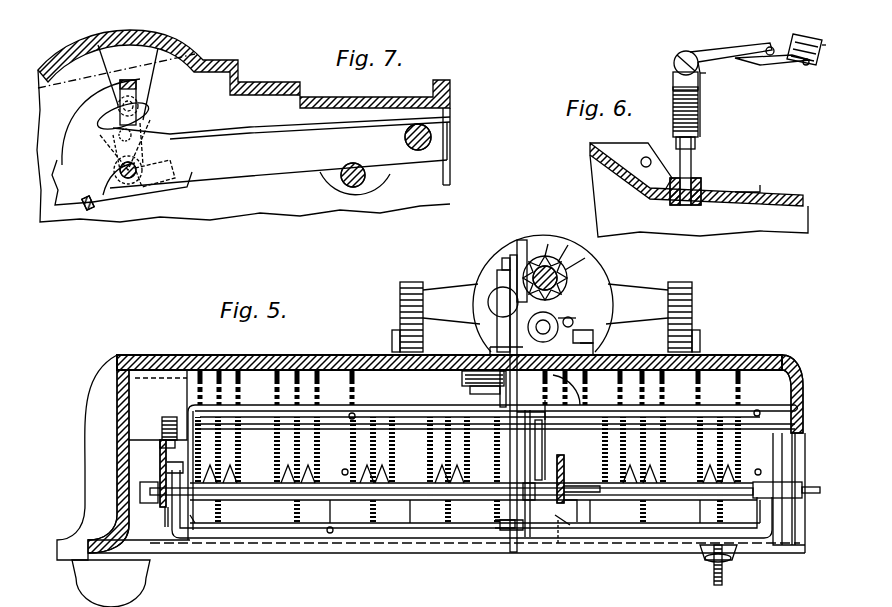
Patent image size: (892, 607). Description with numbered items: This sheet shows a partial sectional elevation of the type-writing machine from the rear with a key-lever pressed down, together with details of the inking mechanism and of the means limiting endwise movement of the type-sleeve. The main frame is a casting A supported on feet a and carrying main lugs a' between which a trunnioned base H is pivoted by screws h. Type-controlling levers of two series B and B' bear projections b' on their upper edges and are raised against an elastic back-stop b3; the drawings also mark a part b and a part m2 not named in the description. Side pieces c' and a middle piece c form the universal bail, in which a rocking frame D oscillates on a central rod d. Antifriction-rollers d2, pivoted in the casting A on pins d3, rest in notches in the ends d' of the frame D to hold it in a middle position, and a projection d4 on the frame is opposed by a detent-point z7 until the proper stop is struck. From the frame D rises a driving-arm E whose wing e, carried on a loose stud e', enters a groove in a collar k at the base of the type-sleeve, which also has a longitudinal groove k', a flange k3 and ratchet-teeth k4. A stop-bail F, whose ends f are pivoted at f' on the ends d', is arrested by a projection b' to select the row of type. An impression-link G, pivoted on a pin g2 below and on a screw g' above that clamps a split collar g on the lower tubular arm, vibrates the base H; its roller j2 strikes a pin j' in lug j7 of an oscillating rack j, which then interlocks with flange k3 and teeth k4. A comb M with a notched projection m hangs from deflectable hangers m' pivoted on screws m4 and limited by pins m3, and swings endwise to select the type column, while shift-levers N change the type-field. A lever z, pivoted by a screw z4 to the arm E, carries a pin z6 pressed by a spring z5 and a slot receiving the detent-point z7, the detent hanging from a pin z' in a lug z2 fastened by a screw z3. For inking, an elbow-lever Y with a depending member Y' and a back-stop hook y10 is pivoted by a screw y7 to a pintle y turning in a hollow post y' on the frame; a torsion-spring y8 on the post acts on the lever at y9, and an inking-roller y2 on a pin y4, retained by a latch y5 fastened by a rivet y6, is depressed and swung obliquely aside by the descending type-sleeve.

In FIG. 5, the casting (main frame) A is at (96, 473).
In FIG. 6, the casting (main frame) A is at (699, 190).
In FIG. 7, the casting (main frame) A is at (244, 107).
In FIG. 5, the feet a is at (115, 583).
In FIG. 5, the main lugs a' is at (546, 339).
In FIG. 5, the type-controlling levers (first series) B is at (469, 473).
In FIG. 5, the type-controlling levers (second series) B' is at (468, 483).
In FIG. 7, the type-controlling levers (second series) B' is at (280, 155).
In FIG. 5, the adjusting screw b is at (718, 565).
In FIG. 5, the projections b' is at (469, 387).
In FIG. 7, the projections b' is at (99, 122).
In FIG. 5, the back-stop b3 is at (545, 442).
In FIG. 5, the middle piece c is at (566, 513).
In FIG. 5, the side pieces c' is at (155, 514).
In FIG. 7, the side pieces c' is at (281, 128).
In FIG. 5, the rocking frame D is at (469, 512).
In FIG. 7, the rocking frame D is at (125, 202).
In FIG. 5, the central rod d is at (485, 486).
In FIG. 7, the central rod d is at (131, 176).
In FIG. 5, the ends of rocking frame d' is at (472, 504).
In FIG. 7, the ends of rocking frame d' is at (98, 152).
In FIG. 5, the antifriction-rollers d2 is at (158, 405).
In FIG. 5, the pins d3 is at (152, 435).
In FIG. 5, the projection d4 is at (498, 531).
In FIG. 5, the driving-arm E is at (503, 403).
In FIG. 5, the wing e is at (513, 271).
In FIG. 5, the loose stud e' is at (496, 303).
In FIG. 5, the stop-bail F is at (492, 400).
In FIG. 7, the stop-bail F is at (128, 85).
In FIG. 7, the ends of stop-bail f is at (106, 155).
In FIG. 5, the pivots of stop-bail f' is at (171, 472).
In FIG. 7, the pivots of stop-bail f' is at (144, 144).
In FIG. 5, the impression-link G is at (579, 390).
In FIG. 5, the clasp or split collar g is at (501, 347).
In FIG. 5, the screw g' is at (595, 347).
In FIG. 5, the pin g2 is at (579, 479).
In FIG. 5, the trunnioned base H is at (545, 293).
In FIG. 5, the screws h is at (400, 300).
In FIG. 5, the oscillating rack j is at (551, 316).
In FIG. 5, the pin j' is at (579, 321).
In FIG. 5, the antifriction-roller j2 is at (585, 338).
In FIG. 5, the lug j7 is at (574, 306).
In FIG. 5, the collar k is at (546, 269).
In FIG. 5, the longitudinal groove k' is at (546, 242).
In FIG. 5, the flange k3 is at (569, 244).
In FIG. 5, the ratchet-teeth k4 is at (582, 256).
In FIG. 5, the comb M is at (475, 521).
In FIG. 5, the projection m is at (544, 472).
In FIG. 5, the hangers m' is at (493, 461).
In FIG. 5, the pivot m2 is at (318, 529).
In FIG. 5, the pins m3 is at (550, 464).
In FIG. 5, the screws m4 is at (495, 423).
In FIG. 5, the shift-lever N is at (158, 484).
In FIG. 6, the elbow-lever (inking-arm) Y is at (731, 82).
In FIG. 6, the depending arm Y' is at (713, 98).
In FIG. 6, the pintle y is at (684, 204).
In FIG. 6, the hollow post y' is at (700, 171).
In FIG. 6, the inking-roller y2 is at (804, 38).
In FIG. 6, the pin y4 is at (831, 36).
In FIG. 6, the latch y5 is at (789, 53).
In FIG. 6, the rivet y6 is at (772, 67).
In FIG. 6, the screw y7 is at (678, 61).
In FIG. 6, the torsion-spring y8 is at (672, 112).
In FIG. 6, the point of spring action y9 is at (672, 84).
In FIG. 6, the hook y10 is at (669, 137).
In FIG. 5, the lever z is at (503, 485).
In FIG. 5, the pin z' is at (472, 379).
In FIG. 5, the lug z2 is at (472, 394).
In FIG. 5, the screw z3 is at (514, 425).
In FIG. 5, the screw z4 is at (531, 416).
In FIG. 5, the spring z5 is at (539, 425).
In FIG. 5, the pin z6 is at (531, 499).
In FIG. 5, the detent-point z7 is at (520, 527).